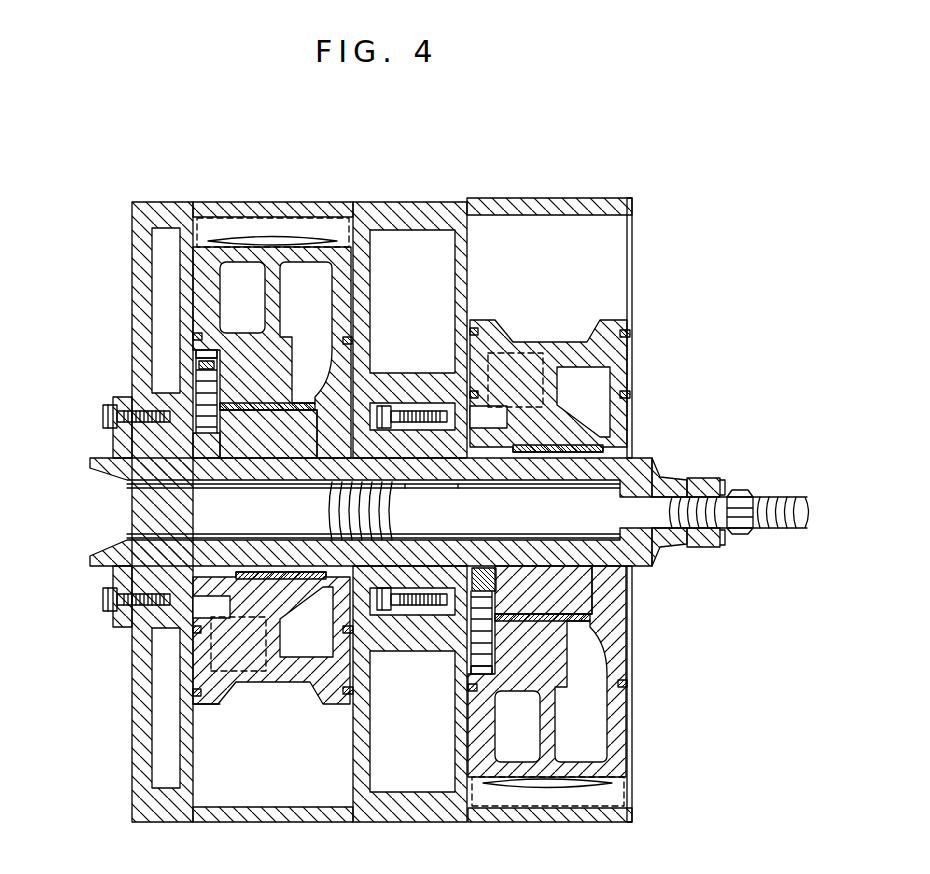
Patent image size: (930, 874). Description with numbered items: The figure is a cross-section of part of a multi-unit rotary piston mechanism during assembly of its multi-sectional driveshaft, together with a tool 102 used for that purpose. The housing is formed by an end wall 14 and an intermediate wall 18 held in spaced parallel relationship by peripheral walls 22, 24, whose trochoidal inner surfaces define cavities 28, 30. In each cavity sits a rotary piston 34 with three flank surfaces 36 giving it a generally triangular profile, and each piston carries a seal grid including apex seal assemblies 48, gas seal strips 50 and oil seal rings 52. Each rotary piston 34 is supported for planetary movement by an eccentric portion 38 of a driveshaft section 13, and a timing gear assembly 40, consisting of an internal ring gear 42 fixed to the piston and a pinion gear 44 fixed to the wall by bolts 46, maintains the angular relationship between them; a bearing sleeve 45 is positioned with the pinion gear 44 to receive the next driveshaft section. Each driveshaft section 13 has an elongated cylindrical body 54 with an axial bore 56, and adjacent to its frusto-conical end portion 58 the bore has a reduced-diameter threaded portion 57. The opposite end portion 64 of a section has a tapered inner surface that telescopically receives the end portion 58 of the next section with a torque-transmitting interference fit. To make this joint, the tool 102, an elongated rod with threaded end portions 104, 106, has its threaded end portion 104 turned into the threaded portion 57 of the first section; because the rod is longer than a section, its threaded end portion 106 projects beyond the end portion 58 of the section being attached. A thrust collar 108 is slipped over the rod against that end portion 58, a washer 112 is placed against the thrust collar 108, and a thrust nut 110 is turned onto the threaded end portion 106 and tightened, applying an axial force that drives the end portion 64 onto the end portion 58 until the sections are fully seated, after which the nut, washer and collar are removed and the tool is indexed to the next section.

The driveshaft section 13 is at (545, 620).
The end wall 14 is at (135, 287).
The intermediate wall 18 is at (428, 208).
The peripheral wall 22 is at (273, 202).
The peripheral wall 24 is at (587, 200).
The cavity 28 is at (272, 774).
The cavity 30 is at (563, 250).
The rotary piston 34 is at (555, 336).
The flank surface 36 is at (215, 700).
The eccentric portion 38 is at (287, 413).
The timing gear assembly 40 is at (212, 410).
The internal ring gear 42 is at (200, 365).
The pinion gear 44 is at (490, 590).
The bearing sleeve 45 is at (460, 457).
The bolt 46 is at (108, 405).
The apex seal assembly 48 is at (320, 228).
The gas seal strip 50 is at (632, 334).
The oil seal ring 52 is at (352, 339).
The cylindrical body 54 is at (476, 330).
The axial bore 56 is at (557, 488).
The threaded portion 57 is at (330, 503).
The end portion 58 is at (372, 470).
The end portion 64 is at (407, 467).
The tool 102 is at (770, 494).
The threaded end portion 104 is at (327, 520).
The threaded end portion 106 is at (772, 530).
The thrust collar 108 is at (707, 478).
The thrust nut 110 is at (745, 534).
The washer 112 is at (698, 547).